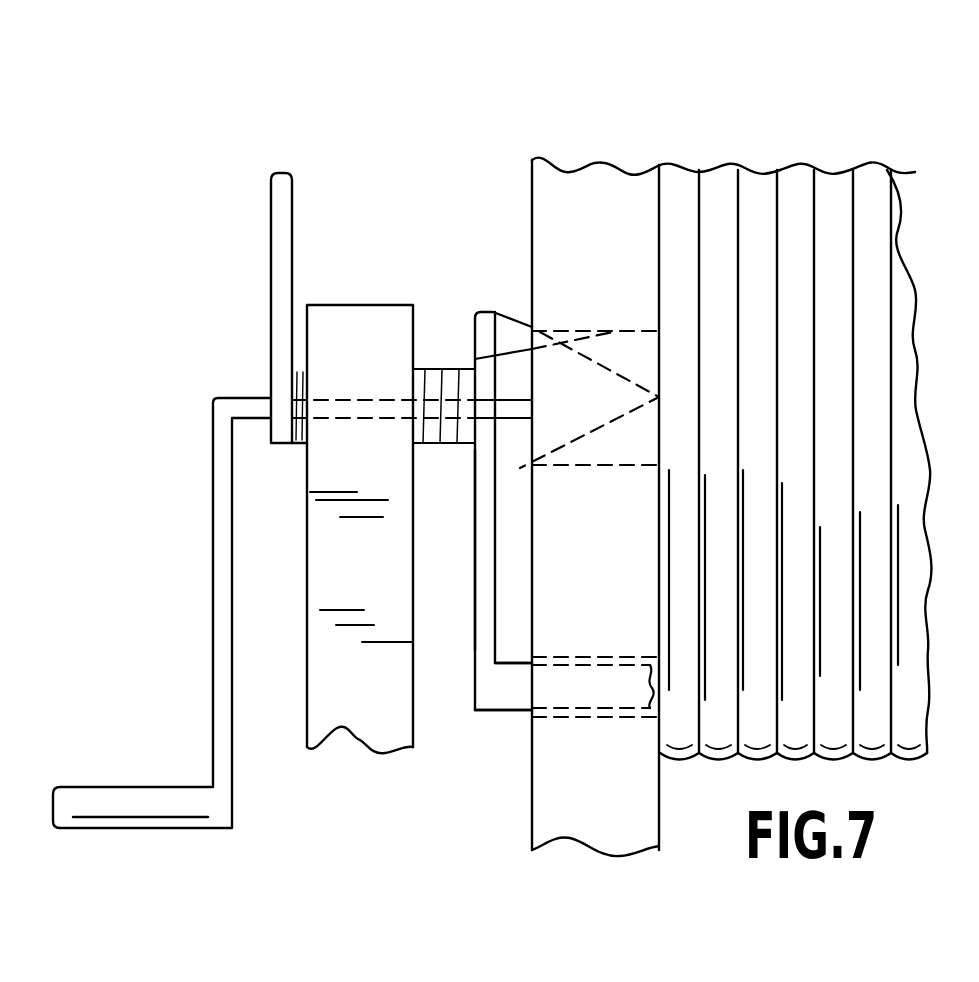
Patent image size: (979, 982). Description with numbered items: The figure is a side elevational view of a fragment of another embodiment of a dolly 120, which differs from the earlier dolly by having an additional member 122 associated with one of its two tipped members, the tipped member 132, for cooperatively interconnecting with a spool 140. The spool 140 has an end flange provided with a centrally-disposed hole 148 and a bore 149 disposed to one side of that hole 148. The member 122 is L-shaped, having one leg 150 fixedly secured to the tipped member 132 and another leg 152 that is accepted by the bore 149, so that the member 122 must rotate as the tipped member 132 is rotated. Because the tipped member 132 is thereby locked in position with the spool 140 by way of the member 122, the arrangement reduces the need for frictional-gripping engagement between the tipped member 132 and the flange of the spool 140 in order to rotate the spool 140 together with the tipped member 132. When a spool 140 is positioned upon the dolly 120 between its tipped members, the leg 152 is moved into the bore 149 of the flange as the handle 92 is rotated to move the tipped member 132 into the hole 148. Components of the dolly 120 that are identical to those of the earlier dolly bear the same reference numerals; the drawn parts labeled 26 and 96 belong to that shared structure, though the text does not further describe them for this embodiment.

The dolly 120 is at (176, 164).
The handle 92 is at (280, 172).
The block 26 is at (363, 305).
The tipped member 132 is at (512, 312).
The centrally-disposed hole 148 is at (477, 357).
The spool 140 is at (532, 200).
The leg 150 is at (477, 555).
The L-bracket 96 is at (213, 632).
The member 122 is at (477, 655).
The leg 152 is at (500, 712).
The bore 149 is at (578, 717).